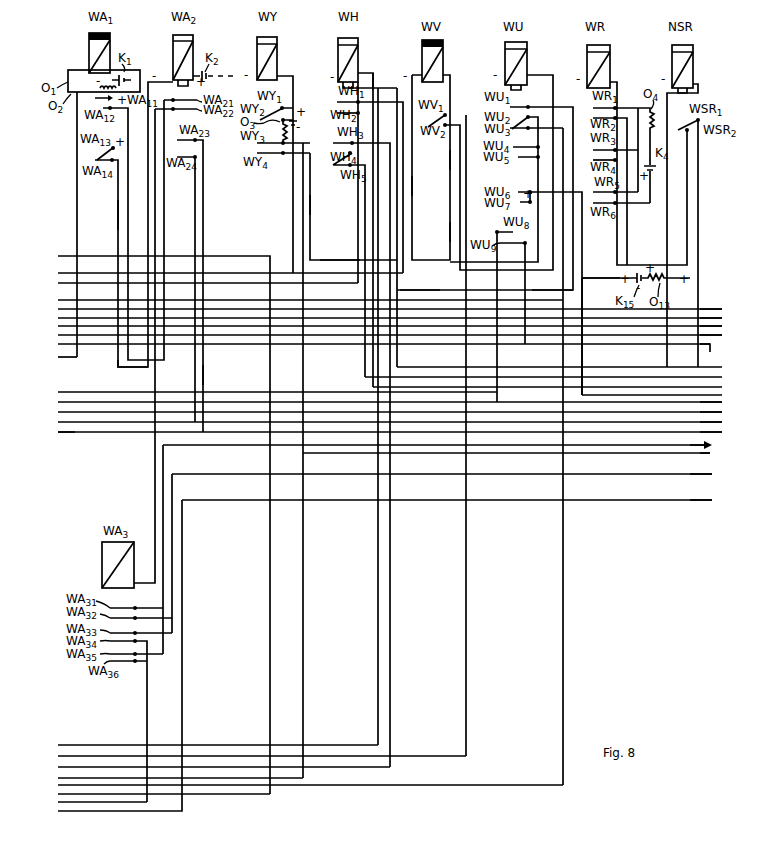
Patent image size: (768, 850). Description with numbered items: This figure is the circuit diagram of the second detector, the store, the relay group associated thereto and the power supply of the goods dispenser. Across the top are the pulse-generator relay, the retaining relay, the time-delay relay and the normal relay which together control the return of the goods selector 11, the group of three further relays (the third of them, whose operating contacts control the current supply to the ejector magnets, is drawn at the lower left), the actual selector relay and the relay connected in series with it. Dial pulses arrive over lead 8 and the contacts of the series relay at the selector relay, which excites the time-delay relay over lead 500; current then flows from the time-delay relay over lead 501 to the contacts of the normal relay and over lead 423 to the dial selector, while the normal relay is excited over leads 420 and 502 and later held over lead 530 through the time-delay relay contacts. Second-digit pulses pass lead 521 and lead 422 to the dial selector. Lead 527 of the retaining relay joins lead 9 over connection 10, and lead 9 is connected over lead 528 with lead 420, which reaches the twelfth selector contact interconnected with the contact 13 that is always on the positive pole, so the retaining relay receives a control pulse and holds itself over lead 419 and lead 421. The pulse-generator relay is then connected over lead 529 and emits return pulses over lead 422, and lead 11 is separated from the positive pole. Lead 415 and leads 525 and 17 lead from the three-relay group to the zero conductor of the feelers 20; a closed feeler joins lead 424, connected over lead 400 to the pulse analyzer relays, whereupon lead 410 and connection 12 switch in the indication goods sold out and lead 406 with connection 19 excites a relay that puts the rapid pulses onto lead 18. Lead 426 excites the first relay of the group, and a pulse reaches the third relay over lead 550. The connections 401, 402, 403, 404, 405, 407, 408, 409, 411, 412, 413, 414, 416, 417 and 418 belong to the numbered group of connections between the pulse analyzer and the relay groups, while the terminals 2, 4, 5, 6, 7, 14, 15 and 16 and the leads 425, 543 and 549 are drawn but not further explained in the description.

The output line 2 is at (722, 309).
The output line 4 is at (708, 458).
The output line 5 is at (722, 326).
The output line 6 is at (707, 484).
The output line 7 is at (706, 352).
The lead 8 is at (722, 367).
The lead 9 is at (722, 387).
The connection 10 is at (722, 377).
The lead 11 is at (722, 395).
The connection 12 is at (722, 402).
The goods selector contact 13 is at (722, 412).
The output line 14 is at (722, 422).
The output line 15 is at (722, 432).
The output line 16 is at (712, 445).
The lead 17 is at (710, 453).
The lead 18 is at (722, 318).
The connection 19 is at (722, 335).
The feelers 20 is at (711, 507).
The lead 400 is at (58, 256).
The connection lead 401 is at (58, 273).
The connection lead 402 is at (58, 283).
The connection lead 403 is at (58, 300).
The connection lead 404 is at (58, 309).
The connection lead 405 is at (58, 318).
The lead 406 is at (58, 326).
The connection lead 407 is at (58, 335).
The connection lead 408 is at (58, 344).
The connection lead 409 is at (63, 357).
The lead 410 is at (58, 392).
The connection lead 411 is at (58, 402).
The connection lead 412 is at (58, 412).
The connection lead 413 is at (58, 422).
The connection lead 414 is at (58, 432).
The lead 415 is at (69, 434).
The connection lead 416 is at (206, 445).
The connection lead 417 is at (206, 474).
The connection lead 418 is at (206, 500).
The lead 419 is at (58, 745).
The lead 420 is at (58, 756).
The lead 421 is at (58, 767).
The lead 422 is at (58, 778).
The lead 423 is at (58, 785).
The lead 424 is at (58, 794).
The conductor 425 is at (58, 802).
The lead 426 is at (88, 363).
The lead 500 is at (601, 280).
The lead 501 is at (412, 186).
The lead 502 is at (450, 232).
The lead 521 is at (552, 298).
The lead 525 is at (203, 375).
The lead 527 is at (374, 78).
The lead 528 is at (420, 285).
The lead 529 is at (340, 260).
The lead 530 is at (450, 160).
The conductor 543 is at (350, 205).
The conductor 549 is at (117, 220).
The lead 550 is at (155, 492).